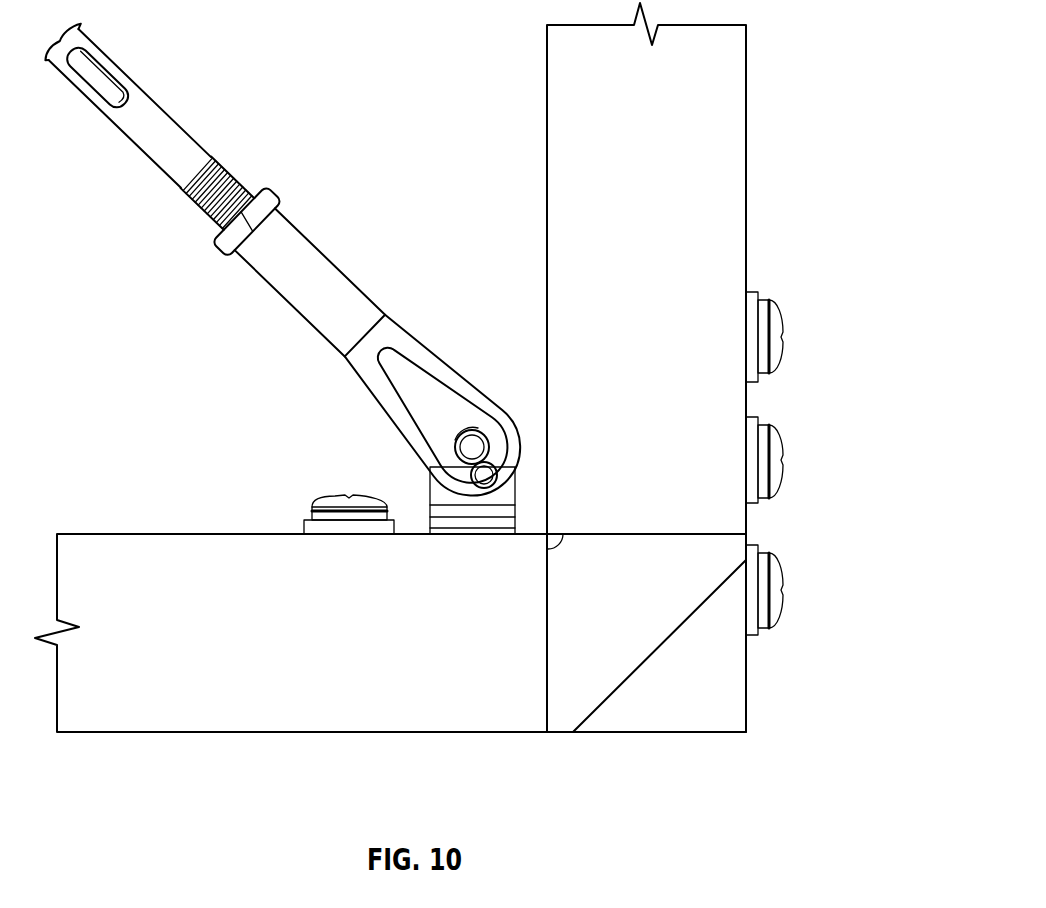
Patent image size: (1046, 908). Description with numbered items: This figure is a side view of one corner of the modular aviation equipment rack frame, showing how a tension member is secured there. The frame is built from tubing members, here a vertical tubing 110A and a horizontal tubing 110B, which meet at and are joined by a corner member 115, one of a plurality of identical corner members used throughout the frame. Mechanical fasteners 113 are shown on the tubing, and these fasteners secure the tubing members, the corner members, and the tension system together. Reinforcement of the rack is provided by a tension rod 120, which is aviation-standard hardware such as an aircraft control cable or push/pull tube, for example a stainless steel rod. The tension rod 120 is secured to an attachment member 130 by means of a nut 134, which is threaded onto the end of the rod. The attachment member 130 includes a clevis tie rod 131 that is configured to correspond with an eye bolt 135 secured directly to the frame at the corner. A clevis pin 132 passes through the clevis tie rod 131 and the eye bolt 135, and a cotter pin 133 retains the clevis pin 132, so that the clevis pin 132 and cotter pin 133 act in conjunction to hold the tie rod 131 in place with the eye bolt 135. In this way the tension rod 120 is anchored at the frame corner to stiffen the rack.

The vertical tubing 110A is at (675, 207).
The horizontal tubing 110B is at (360, 656).
The mechanical fastener 113 is at (322, 498).
The corner member 115 is at (623, 612).
The tension rod 120 is at (146, 95).
The attachment member 130 is at (318, 244).
The clevis tie rod 131 is at (392, 333).
The clevis pin 132 is at (472, 447).
The cotter pin 133 is at (470, 468).
The nut 134 is at (276, 194).
The eye bolt 135 is at (503, 500).